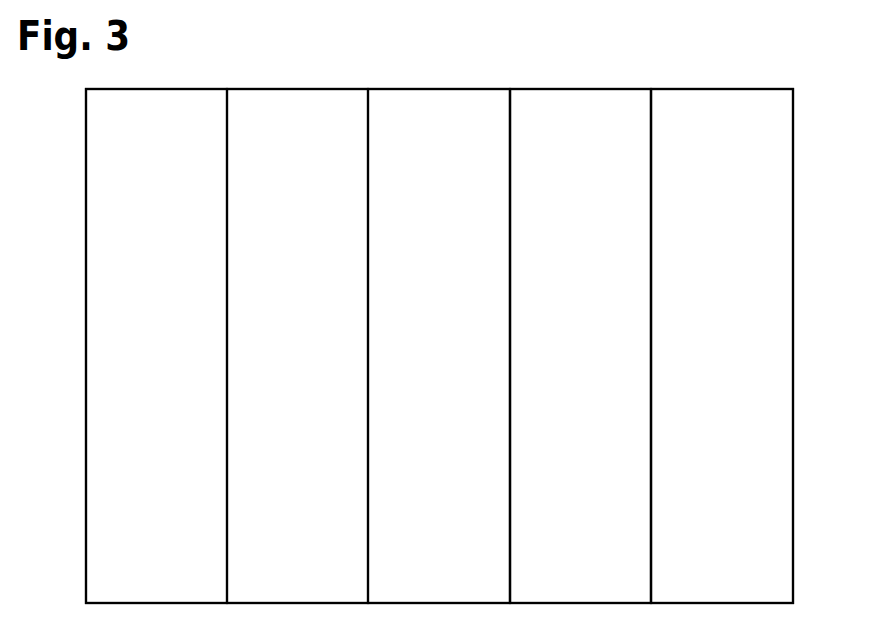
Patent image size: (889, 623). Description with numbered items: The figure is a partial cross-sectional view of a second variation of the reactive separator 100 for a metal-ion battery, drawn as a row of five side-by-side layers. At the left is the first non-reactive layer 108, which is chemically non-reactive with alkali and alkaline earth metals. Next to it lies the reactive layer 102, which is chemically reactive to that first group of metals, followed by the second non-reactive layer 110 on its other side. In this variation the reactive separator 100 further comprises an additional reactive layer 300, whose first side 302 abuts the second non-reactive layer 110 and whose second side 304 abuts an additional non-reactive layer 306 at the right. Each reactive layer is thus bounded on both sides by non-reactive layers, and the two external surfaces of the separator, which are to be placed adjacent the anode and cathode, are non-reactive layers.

The reactive separator 100 is at (822, 78).
The first non-reactive layer 108 is at (138, 357).
The reactive layer 102 is at (279, 357).
The second non-reactive layer 110 is at (420, 357).
The additional reactive layer 300 is at (560, 387).
The first side 302 is at (508, 109).
The second side 304 is at (654, 108).
The additional non-reactive layer 306 is at (702, 400).